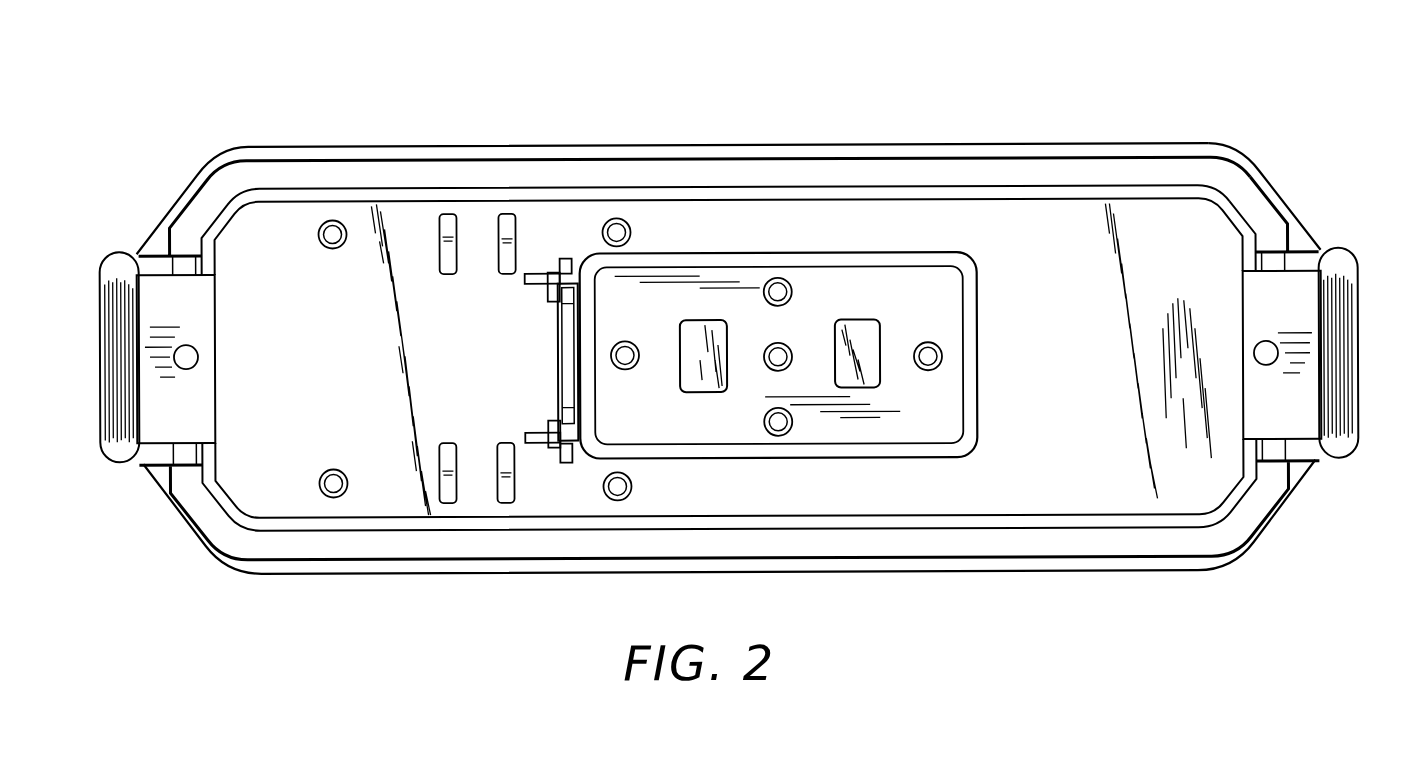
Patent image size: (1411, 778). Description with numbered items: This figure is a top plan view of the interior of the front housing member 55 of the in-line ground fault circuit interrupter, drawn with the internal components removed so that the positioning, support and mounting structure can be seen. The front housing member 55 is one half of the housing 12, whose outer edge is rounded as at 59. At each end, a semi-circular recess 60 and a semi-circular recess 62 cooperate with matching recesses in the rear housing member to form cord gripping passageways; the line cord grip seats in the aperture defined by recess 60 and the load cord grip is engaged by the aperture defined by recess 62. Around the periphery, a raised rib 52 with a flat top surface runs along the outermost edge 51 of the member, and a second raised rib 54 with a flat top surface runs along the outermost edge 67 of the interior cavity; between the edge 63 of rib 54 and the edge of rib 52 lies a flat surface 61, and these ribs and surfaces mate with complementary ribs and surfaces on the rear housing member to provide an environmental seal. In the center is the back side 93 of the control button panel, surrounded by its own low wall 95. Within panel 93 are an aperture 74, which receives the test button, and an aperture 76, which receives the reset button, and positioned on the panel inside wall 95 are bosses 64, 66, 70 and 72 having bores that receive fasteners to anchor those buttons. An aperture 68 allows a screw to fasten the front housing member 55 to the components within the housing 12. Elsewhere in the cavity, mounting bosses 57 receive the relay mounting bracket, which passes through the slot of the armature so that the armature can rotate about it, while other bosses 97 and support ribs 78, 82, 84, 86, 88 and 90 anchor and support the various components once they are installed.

The housing 12 is at (726, 341).
The outermost edge 51 is at (1162, 145).
The raised rib 52 is at (1240, 155).
The raised rib 54 is at (1217, 197).
The front housing member 55 is at (683, 141).
The mounting bosses 57 is at (576, 257).
The rounded outer edge 59 is at (1040, 555).
The semi-circular recess 60 is at (1282, 310).
The flat surface 61 is at (820, 172).
The semi-circular recess 62 is at (140, 318).
The edge of rib 63 is at (978, 183).
The boss 64 is at (646, 334).
The boss 66 is at (793, 290).
The outermost edge of cavity 67 is at (1053, 200).
The aperture 68 is at (766, 350).
The boss 70 is at (947, 335).
The boss 72 is at (765, 425).
The aperture 74 is at (702, 380).
The aperture 76 is at (858, 326).
The support rib 78 is at (540, 284).
The support rib 82 is at (540, 432).
The support rib 84 is at (447, 273).
The support rib 86 is at (508, 273).
The support rib 88 is at (448, 442).
The support rib 90 is at (506, 442).
The back side of panel 93 is at (950, 416).
The low wall 95 is at (980, 336).
The bosses 97 is at (344, 243).